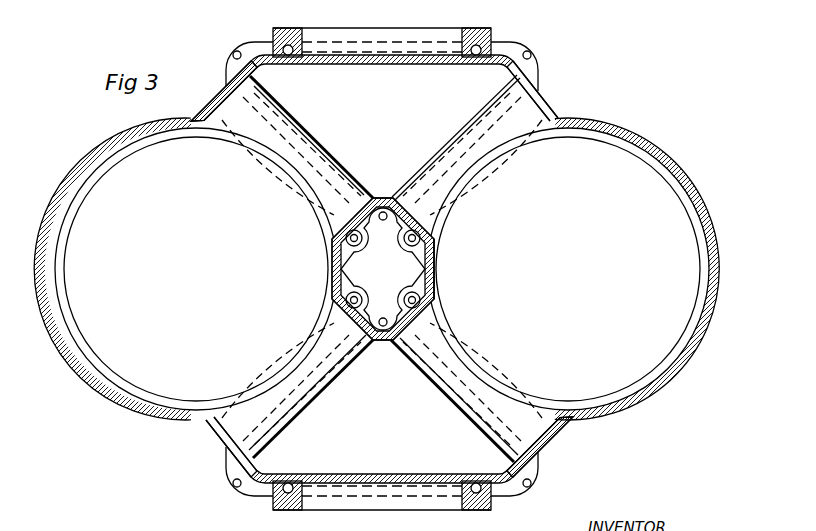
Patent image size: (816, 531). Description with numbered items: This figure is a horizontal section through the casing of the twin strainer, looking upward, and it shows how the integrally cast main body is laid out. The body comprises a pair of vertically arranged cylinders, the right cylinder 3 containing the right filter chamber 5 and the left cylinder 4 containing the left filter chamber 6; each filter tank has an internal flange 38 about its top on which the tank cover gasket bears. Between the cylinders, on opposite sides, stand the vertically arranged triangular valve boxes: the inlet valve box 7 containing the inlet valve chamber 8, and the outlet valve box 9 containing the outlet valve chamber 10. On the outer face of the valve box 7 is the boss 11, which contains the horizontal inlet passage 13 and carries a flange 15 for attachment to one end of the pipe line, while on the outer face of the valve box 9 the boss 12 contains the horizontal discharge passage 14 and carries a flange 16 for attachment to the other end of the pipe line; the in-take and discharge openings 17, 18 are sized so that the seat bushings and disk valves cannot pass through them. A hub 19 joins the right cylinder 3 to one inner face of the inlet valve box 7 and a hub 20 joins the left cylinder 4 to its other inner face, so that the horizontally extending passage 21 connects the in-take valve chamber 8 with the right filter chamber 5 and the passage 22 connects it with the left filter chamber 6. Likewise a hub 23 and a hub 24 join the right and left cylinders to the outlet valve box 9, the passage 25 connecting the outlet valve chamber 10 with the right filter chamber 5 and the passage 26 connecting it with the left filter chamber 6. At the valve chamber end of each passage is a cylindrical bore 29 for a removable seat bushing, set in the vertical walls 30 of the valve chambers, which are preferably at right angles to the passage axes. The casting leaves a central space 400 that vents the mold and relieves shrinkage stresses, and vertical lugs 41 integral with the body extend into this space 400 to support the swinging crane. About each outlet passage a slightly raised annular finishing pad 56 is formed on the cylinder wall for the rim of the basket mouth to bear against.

The right cylinder 3 is at (671, 160).
The left cylinder 4 is at (93, 163).
The right filter chamber 5 is at (669, 190).
The left filter chamber 6 is at (102, 183).
The inlet valve box 7 is at (502, 60).
The inlet valve chamber 8 is at (526, 72).
The outlet valve box 9 is at (526, 463).
The outlet valve chamber 10 is at (523, 489).
The inlet boss 11 is at (303, 45).
The discharge boss 12 is at (304, 488).
The horizontal inlet passage 13 is at (365, 53).
The horizontal discharge passage 14 is at (343, 488).
The inlet flange 15 is at (489, 30).
The discharge flange 16 is at (492, 503).
The in-take opening 17 is at (393, 27).
The discharge opening 18 is at (347, 510).
The hub 19 is at (538, 95).
The hub 20 is at (216, 106).
The horizontally extending passage 21 is at (530, 112).
The horizontally extending passage 22 is at (230, 97).
The hub 23 is at (553, 433).
The hub 24 is at (213, 427).
The horizontally extending passage 25 is at (548, 436).
The horizontally extending passage 26 is at (238, 437).
The cylindrical bore 29 is at (270, 95).
The vertical walls of the valve chambers 30 is at (430, 160).
The internal flange 38 is at (66, 265).
The vertical lugs 41 is at (407, 275).
The annular finishing pad 56 is at (440, 293).
The central space 400 is at (430, 266).